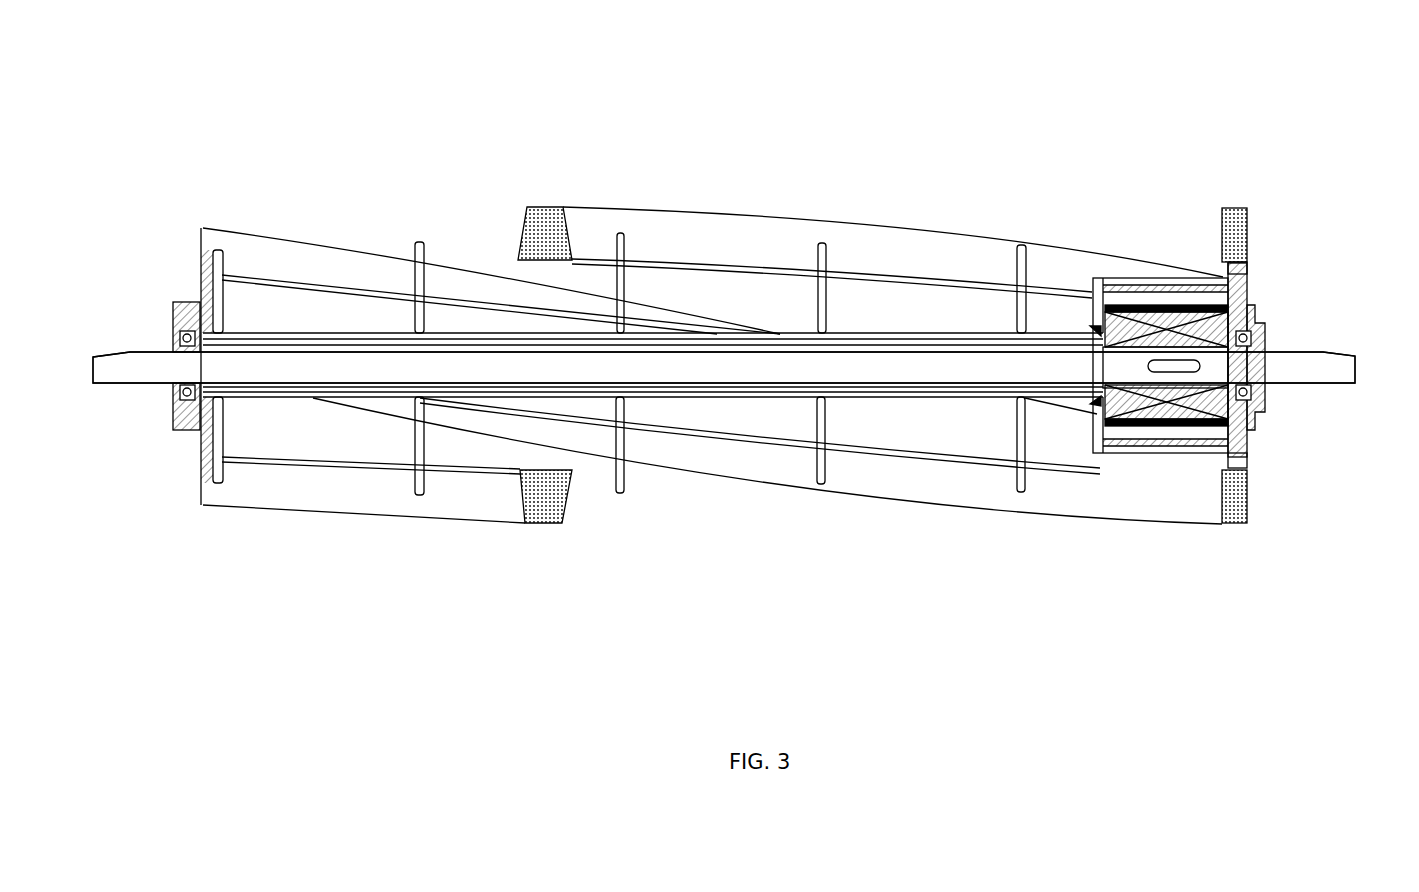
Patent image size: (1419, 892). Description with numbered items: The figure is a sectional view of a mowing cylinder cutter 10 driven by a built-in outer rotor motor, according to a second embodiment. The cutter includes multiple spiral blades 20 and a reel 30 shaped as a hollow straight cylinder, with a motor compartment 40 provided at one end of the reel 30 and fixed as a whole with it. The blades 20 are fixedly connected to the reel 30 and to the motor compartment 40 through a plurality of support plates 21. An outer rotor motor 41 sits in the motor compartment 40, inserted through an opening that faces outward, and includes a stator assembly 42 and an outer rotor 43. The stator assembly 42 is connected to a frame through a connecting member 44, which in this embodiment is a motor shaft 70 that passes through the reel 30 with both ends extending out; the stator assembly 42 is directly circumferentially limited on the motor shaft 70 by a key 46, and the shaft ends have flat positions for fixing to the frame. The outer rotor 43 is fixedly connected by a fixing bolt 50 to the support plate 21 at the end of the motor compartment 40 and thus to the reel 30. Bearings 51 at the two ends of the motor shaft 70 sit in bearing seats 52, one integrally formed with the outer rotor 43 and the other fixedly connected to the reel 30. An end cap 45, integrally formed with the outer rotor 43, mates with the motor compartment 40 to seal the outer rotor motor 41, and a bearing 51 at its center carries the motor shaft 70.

The mowing cylinder cutter 10 is at (171, 124).
The blades 20 is at (318, 267).
The support plate 21 is at (618, 445).
The reel 30 is at (437, 333).
The motor compartment 40 is at (1135, 364).
The outer rotor motor 41 is at (1160, 332).
The stator assembly 42 is at (1207, 405).
The outer rotor 43 is at (1249, 448).
The connecting member 44 is at (756, 392).
The end cap 45 is at (1238, 297).
The key 46 is at (1100, 448).
The fixing bolt 50 is at (1240, 262).
The bearing 51 is at (187, 333).
The bearing seat 52 is at (197, 430).
The motor shaft 70 is at (148, 363).